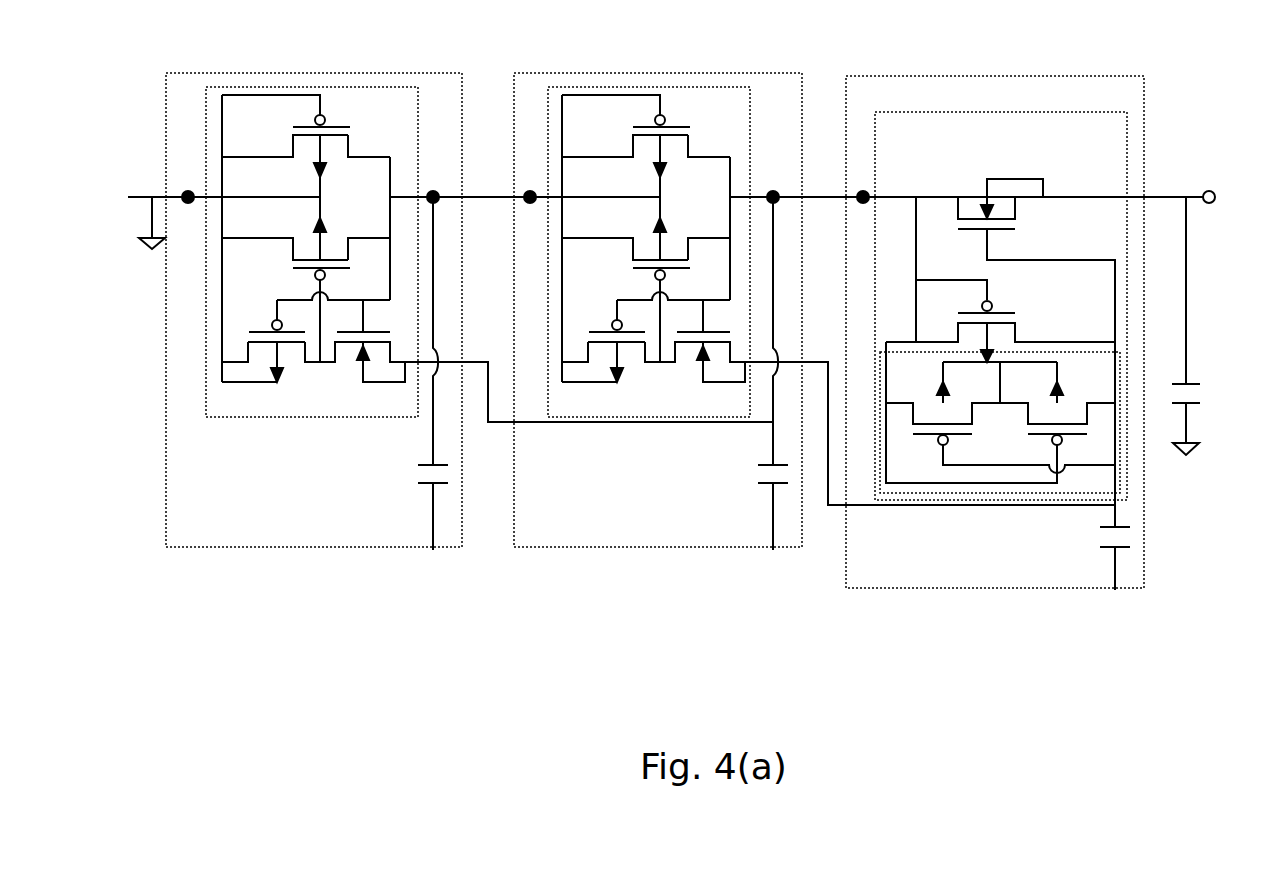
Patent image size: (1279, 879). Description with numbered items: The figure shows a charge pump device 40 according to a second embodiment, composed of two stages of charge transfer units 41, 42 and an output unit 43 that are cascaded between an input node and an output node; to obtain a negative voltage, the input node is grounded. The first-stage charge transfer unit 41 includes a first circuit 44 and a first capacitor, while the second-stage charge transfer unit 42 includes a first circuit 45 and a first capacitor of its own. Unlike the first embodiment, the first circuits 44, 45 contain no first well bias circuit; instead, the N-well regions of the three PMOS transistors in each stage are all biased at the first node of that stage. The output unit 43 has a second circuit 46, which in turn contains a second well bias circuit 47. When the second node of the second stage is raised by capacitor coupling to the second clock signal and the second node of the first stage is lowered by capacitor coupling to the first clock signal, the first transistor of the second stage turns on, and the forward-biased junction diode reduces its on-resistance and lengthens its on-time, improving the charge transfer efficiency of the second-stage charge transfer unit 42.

The charge pump device 40 is at (207, 602).
The first-stage charge transfer unit 41 is at (300, 73).
The second-stage charge transfer unit 42 is at (650, 73).
The output unit 43 is at (990, 76).
The first circuit 44 is at (288, 418).
The first circuit 45 is at (632, 418).
The second circuit 46 is at (940, 500).
The second well bias circuit 47 is at (1000, 493).